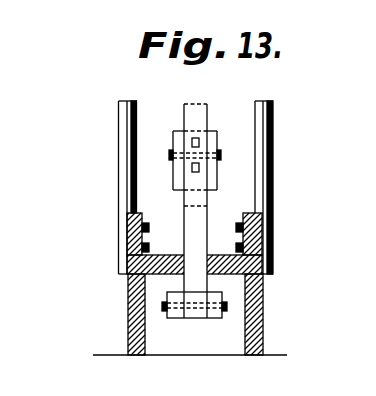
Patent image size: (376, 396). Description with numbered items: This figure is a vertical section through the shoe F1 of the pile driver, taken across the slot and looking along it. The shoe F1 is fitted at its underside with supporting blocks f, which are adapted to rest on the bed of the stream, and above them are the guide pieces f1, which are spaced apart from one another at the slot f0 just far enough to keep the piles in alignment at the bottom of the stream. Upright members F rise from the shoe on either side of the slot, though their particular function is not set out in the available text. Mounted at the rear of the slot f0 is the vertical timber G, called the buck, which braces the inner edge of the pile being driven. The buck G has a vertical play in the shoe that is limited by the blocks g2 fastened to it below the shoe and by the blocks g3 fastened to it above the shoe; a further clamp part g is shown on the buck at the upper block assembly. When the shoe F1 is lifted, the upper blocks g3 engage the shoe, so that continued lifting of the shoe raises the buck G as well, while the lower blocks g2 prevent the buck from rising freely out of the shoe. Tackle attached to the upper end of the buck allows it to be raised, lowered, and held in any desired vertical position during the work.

The channel guide post F is at (118, 140).
The shoe F1 is at (258, 240).
The supporting blocks f is at (128, 318).
The guide pieces f1 is at (290, 263).
The slot f0 is at (203, 262).
The buck G is at (208, 110).
The upper clamp g is at (199, 189).
The blocks g3 is at (206, 126).
The blocks g2 is at (212, 320).